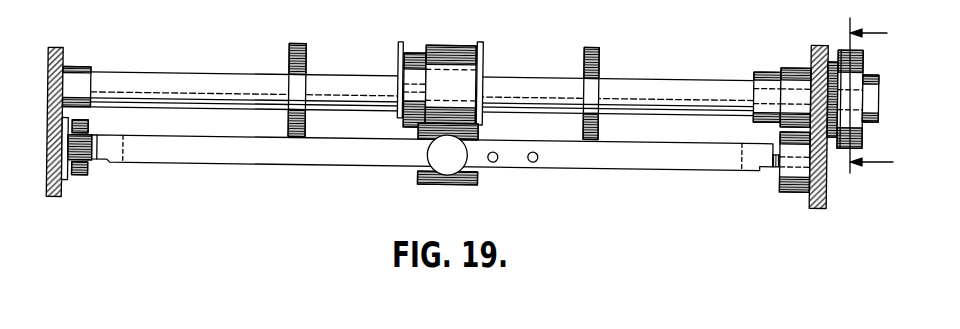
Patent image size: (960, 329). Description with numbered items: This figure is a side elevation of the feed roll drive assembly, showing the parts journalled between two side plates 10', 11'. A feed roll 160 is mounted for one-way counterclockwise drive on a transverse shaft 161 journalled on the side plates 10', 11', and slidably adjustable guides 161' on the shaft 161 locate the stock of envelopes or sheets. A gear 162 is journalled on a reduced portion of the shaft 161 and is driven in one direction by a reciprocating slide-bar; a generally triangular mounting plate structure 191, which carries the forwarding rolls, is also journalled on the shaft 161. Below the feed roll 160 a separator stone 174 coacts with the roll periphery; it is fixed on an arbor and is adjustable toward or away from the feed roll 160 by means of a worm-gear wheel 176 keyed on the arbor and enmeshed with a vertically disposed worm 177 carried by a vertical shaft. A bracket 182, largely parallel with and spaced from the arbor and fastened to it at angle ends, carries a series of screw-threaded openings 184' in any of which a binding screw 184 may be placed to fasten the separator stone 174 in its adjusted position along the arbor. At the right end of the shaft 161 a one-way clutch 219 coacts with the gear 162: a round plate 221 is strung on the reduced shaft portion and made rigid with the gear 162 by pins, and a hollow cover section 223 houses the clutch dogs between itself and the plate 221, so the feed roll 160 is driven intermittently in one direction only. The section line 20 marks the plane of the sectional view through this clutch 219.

The side plate 10' is at (805, 132).
The side plate 11' is at (43, 121).
The section line 20- 20 is at (871, 97).
The feed roll 160 is at (465, 90).
The transverse shaft 161 is at (407, 84).
The guides 161' is at (440, 81).
The gear 162 is at (830, 72).
The separator stone 174 is at (477, 185).
The worm-gear wheel 176 is at (88, 127).
The worm 177 is at (72, 151).
The bracket 182 is at (270, 158).
The binding screw 184 is at (412, 169).
The screw-threaded openings 184' is at (513, 178).
The mounting plate structure 191 is at (396, 47).
The one-way clutch 219 is at (880, 106).
The disk or plate 221 is at (840, 50).
The cover section 223 is at (858, 63).